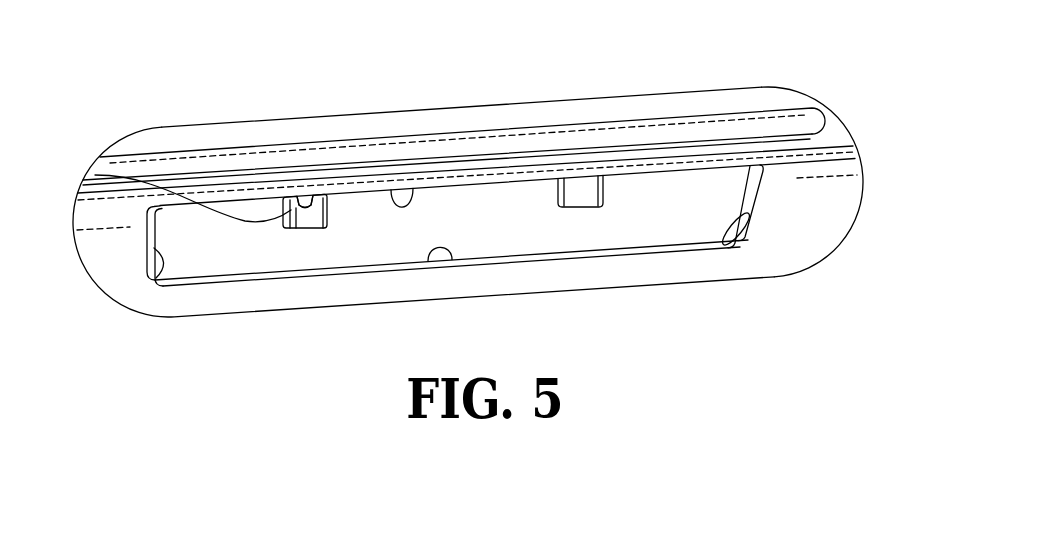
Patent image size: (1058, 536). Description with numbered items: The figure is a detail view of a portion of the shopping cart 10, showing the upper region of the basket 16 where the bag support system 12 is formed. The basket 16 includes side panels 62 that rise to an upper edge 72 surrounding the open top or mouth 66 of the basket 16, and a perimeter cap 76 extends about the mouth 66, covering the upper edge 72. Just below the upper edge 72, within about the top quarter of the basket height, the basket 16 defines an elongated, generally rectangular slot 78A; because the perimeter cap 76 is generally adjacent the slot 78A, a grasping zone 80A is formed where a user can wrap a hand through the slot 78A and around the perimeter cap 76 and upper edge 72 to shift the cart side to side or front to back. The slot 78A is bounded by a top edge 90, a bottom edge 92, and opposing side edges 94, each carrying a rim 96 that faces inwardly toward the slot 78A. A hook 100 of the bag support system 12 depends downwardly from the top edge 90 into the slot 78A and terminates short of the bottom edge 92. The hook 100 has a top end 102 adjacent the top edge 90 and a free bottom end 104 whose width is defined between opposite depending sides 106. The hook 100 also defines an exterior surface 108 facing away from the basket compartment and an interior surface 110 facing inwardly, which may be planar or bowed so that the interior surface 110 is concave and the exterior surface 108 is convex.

The shopping cart 10 is at (154, 112).
The bag support system 12 is at (622, 152).
The basket 16 is at (812, 203).
The side panels 62 is at (800, 240).
The mouth 66 is at (200, 147).
The upper edge 72 is at (245, 147).
The perimeter cap 76 is at (698, 132).
The slot 78A is at (700, 190).
The grasping zone 80A is at (493, 147).
The top edge 90 is at (408, 186).
The bottom edge 92 is at (452, 260).
The side edges 94 is at (160, 278).
The rim 96 is at (208, 282).
The hook 100 is at (95, 175).
The top end 102 is at (310, 197).
The bottom end 104 is at (302, 228).
The depending sides 106 is at (333, 217).
The exterior surface 108 is at (287, 228).
The interior surface 110 is at (334, 197).